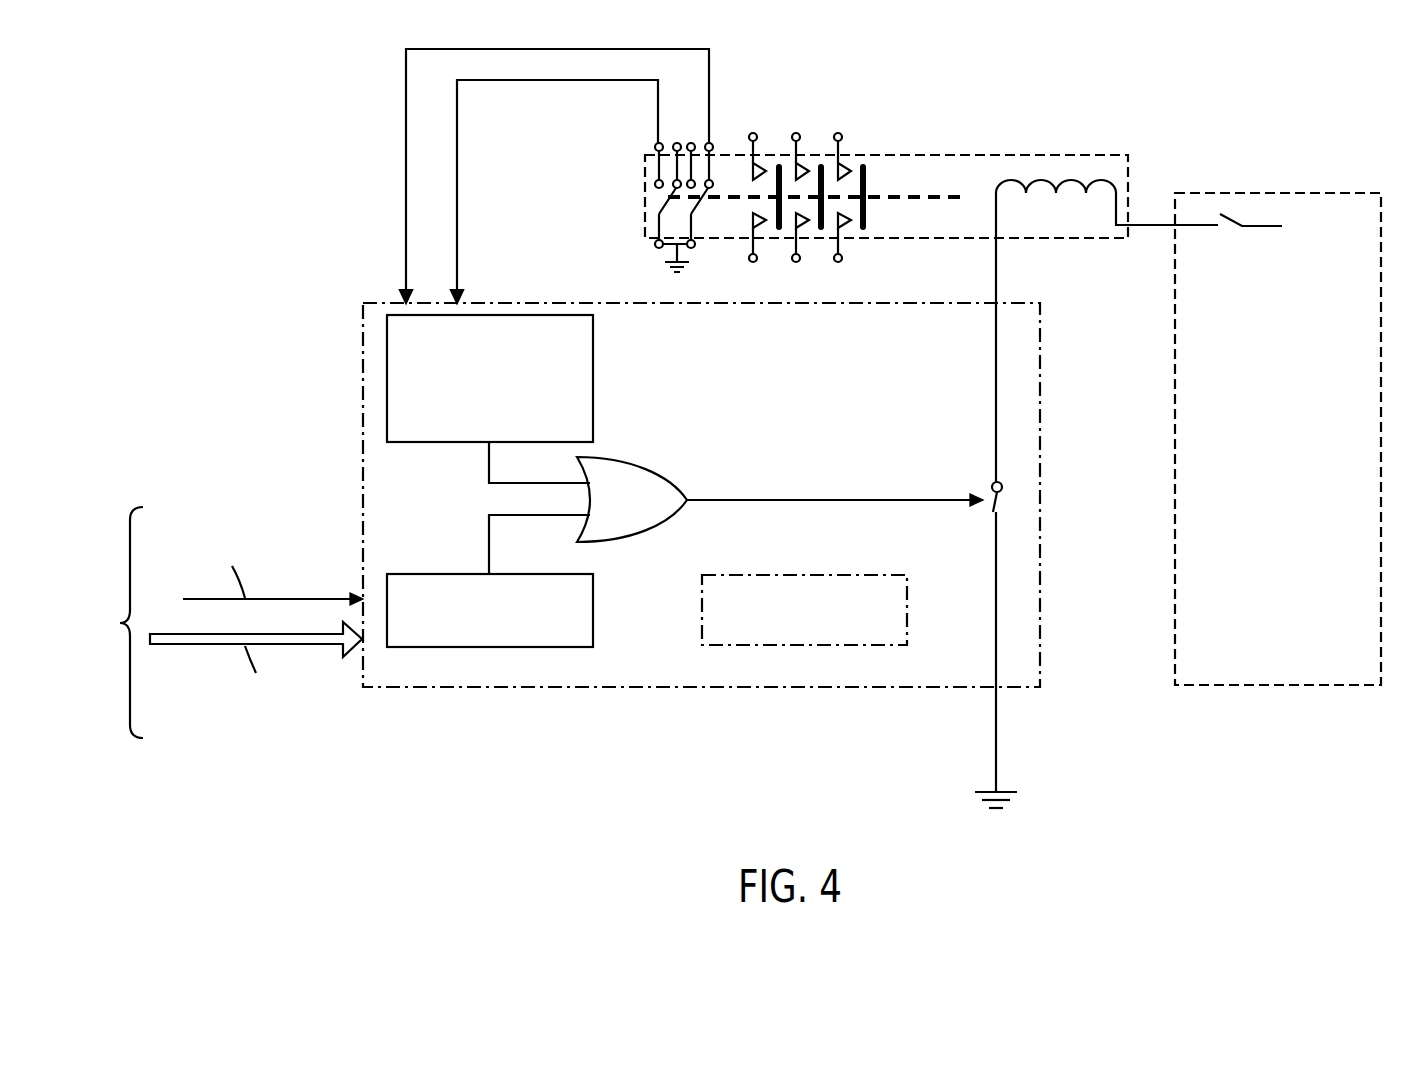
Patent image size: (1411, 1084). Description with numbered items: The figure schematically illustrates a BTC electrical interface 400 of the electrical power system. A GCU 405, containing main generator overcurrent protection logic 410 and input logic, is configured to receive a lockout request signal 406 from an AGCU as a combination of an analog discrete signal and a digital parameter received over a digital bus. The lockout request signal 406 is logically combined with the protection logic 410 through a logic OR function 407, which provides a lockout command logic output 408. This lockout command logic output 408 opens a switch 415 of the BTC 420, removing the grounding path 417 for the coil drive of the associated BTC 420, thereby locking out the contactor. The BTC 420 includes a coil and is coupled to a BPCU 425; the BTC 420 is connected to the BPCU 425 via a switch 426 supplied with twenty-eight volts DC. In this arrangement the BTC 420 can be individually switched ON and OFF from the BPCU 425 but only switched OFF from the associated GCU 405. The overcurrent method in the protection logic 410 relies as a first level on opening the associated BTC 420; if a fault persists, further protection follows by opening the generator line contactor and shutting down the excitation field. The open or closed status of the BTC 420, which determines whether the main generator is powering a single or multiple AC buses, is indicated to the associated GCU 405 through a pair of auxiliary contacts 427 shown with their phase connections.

The BTC electrical interface 400 is at (200, 178).
The GCU 405 is at (701, 468).
The lockout request signal 406 is at (121, 623).
The logic OR function 407 is at (645, 466).
The lockout command logic output 408 is at (826, 498).
The protection logic 410 is at (530, 315).
The switch 415 is at (971, 479).
The grounding path 417 is at (996, 745).
The BTC 420 is at (1057, 152).
The BPCU 425 is at (1278, 411).
The switch 426 is at (1228, 232).
The auxiliary contact 427 is at (639, 177).